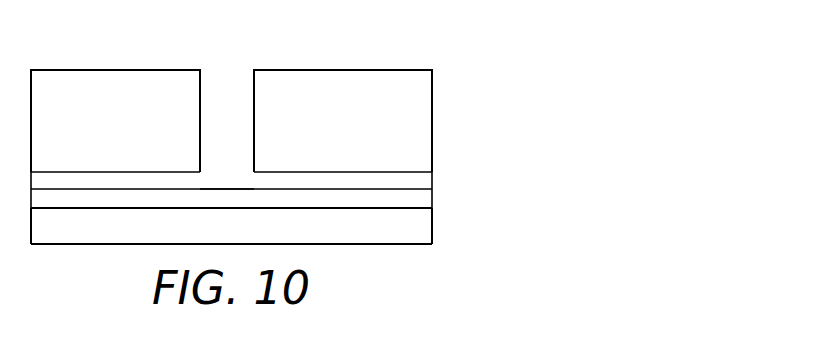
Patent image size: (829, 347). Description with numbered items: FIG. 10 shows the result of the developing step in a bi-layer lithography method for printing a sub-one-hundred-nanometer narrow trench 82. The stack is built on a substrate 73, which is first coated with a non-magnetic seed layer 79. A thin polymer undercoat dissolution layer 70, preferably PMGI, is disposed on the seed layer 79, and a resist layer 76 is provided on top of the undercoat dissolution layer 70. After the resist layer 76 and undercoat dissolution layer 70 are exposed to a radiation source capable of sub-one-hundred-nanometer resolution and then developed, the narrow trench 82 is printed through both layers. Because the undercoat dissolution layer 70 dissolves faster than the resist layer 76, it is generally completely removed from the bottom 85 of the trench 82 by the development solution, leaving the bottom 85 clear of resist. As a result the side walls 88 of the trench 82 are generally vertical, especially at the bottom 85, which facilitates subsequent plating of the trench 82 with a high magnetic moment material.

The substrate 73 is at (434, 226).
The non-magnetic seed layer 79 is at (434, 200).
The undercoat dissolution layer 70 is at (434, 184).
The resist layer 76 is at (434, 124).
The narrow trench 82 is at (240, 72).
The bottom of the trench 85 is at (225, 187).
The trench side walls 88 is at (254, 88).